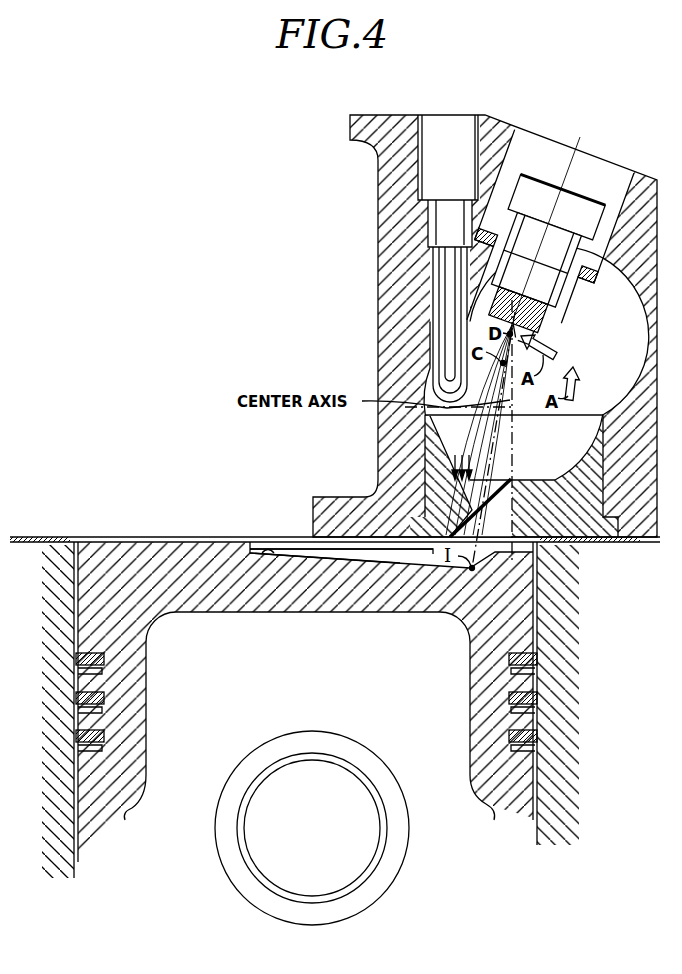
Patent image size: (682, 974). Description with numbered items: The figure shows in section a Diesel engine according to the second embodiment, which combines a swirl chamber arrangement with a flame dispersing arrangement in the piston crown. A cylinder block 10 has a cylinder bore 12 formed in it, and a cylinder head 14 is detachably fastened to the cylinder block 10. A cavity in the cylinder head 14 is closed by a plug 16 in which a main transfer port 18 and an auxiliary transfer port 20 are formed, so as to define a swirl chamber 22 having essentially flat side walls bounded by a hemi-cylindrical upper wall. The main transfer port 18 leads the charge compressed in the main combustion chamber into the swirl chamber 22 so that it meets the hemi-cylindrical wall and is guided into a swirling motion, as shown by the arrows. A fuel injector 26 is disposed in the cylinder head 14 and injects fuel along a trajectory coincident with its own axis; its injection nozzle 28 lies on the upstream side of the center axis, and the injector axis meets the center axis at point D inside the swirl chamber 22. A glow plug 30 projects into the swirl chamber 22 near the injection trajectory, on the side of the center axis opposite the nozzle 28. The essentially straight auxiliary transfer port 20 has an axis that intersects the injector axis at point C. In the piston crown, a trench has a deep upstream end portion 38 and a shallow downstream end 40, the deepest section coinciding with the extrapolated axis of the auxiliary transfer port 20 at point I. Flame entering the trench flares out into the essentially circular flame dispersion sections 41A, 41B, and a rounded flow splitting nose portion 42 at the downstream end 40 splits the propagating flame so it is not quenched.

The cylinder block 10 is at (335, 684).
The cylinder bore 12 is at (308, 697).
The cylinder head 14 is at (477, 326).
The plug 16 is at (430, 437).
The main transfer port 18 is at (526, 497).
The auxiliary transfer port 20 is at (470, 493).
The swirl chamber 22 is at (562, 449).
The fuel injector 26 is at (541, 155).
The injection nozzle 28 is at (528, 295).
The glow plug 30 is at (437, 214).
The deep upstream end portion 38 is at (493, 550).
The shallow downstream end 40 is at (272, 556).
The flame dispersion section 41A is at (298, 548).
The flame dispersion section 41B is at (318, 509).
The rounded flow splitting nose portion 42 is at (258, 542).